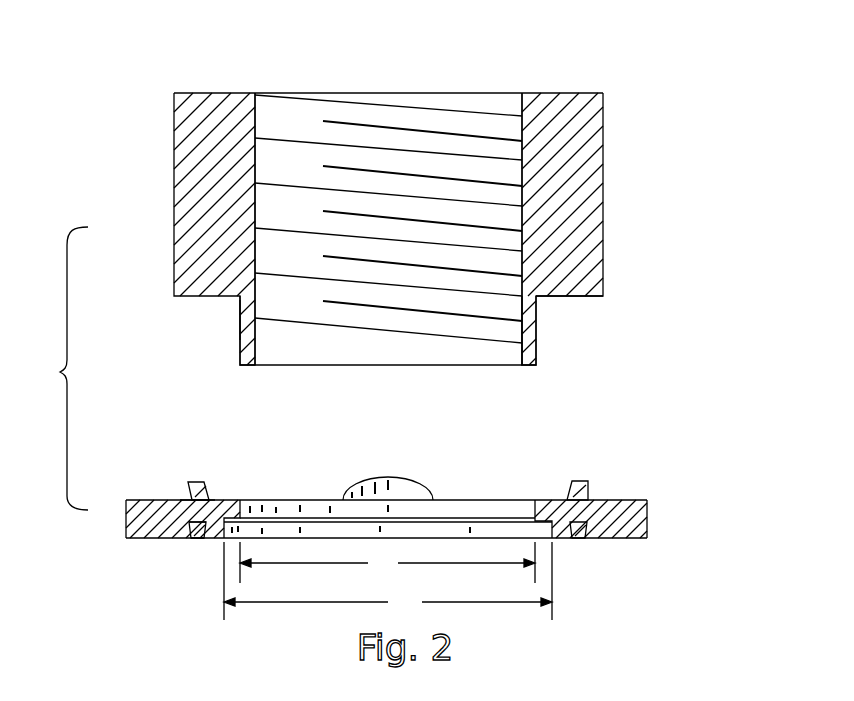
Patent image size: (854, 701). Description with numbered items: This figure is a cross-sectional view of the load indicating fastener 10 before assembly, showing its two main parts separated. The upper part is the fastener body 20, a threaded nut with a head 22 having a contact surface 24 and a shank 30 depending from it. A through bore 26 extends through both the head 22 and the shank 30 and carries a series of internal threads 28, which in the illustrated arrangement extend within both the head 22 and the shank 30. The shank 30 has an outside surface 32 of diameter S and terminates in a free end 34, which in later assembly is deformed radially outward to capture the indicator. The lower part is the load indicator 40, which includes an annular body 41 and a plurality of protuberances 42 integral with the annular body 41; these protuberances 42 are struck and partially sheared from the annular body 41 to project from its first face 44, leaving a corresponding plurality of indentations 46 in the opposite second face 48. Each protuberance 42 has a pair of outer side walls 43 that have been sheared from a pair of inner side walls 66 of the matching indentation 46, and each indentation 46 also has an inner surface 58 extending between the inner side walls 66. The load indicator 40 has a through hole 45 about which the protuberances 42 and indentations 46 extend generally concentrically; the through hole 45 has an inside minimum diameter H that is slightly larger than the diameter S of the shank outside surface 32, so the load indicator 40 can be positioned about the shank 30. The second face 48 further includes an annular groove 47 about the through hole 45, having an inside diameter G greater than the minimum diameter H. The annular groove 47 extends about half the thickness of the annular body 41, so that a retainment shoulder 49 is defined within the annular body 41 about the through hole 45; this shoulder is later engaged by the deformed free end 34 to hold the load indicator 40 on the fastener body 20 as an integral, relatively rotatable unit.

The load indicating fastener 10 is at (652, 150).
The fastener body 20 is at (604, 228).
The head 22 is at (603, 105).
The contact surface 24 is at (583, 297).
The through bore 26 is at (462, 98).
The internal threads 28 is at (333, 115).
The shank 30 is at (240, 343).
The outside surface 32 is at (540, 300).
The free end 34 is at (537, 357).
The diameter S is at (240, 320).
The load indicator 40 is at (650, 521).
The annular body 41 is at (634, 530).
The protuberances 42 is at (193, 482).
The outer side walls 43 is at (187, 500).
The first face 44 is at (618, 500).
The through hole 45 is at (305, 513).
The indentations 46 is at (188, 540).
The annular groove 47 is at (232, 526).
The second face 48 is at (608, 538).
The retainment shoulder 49 is at (540, 522).
The inner surface 58 is at (194, 540).
The inner side walls 66 is at (145, 503).
The inside minimum diameter H is at (387, 562).
The inside diameter G is at (388, 581).